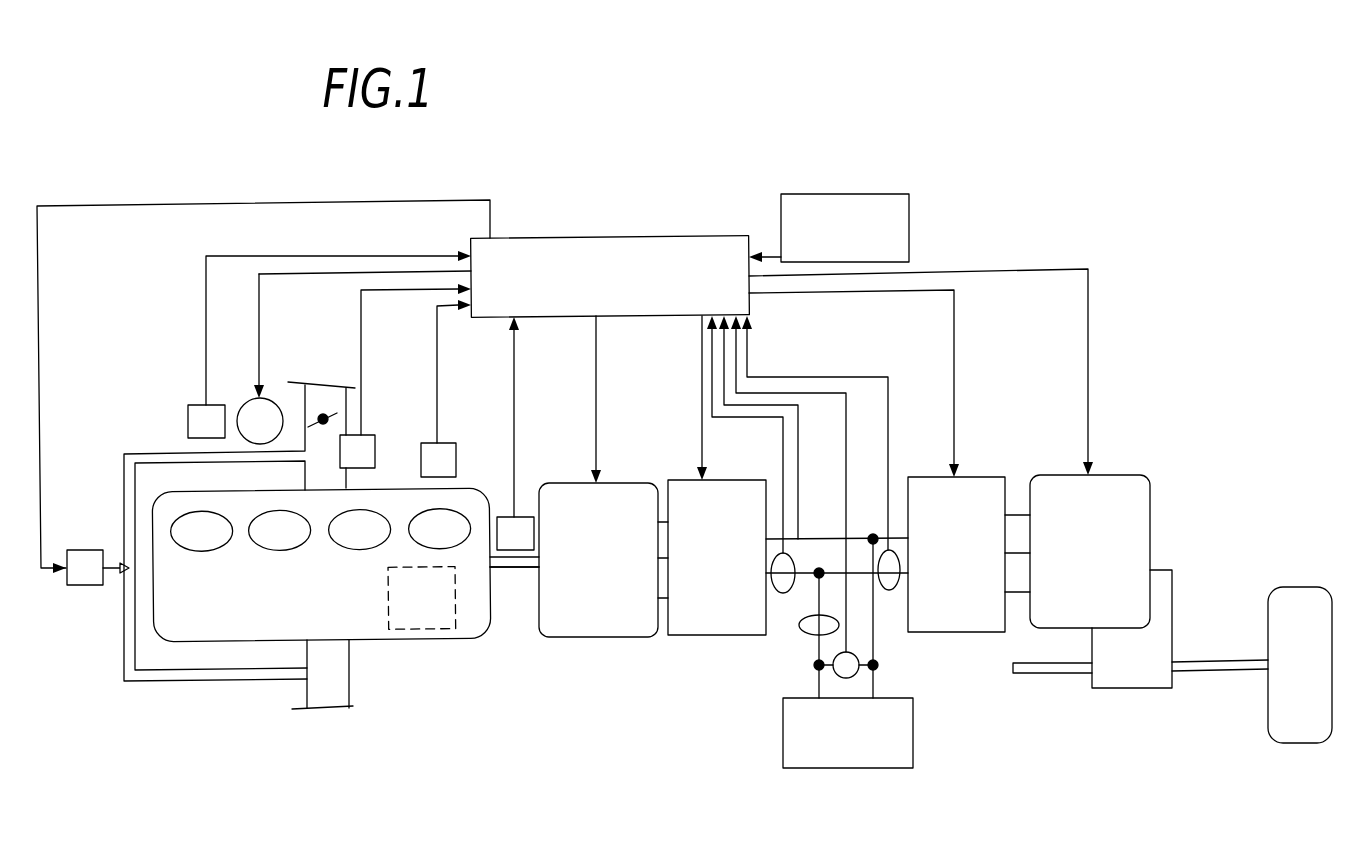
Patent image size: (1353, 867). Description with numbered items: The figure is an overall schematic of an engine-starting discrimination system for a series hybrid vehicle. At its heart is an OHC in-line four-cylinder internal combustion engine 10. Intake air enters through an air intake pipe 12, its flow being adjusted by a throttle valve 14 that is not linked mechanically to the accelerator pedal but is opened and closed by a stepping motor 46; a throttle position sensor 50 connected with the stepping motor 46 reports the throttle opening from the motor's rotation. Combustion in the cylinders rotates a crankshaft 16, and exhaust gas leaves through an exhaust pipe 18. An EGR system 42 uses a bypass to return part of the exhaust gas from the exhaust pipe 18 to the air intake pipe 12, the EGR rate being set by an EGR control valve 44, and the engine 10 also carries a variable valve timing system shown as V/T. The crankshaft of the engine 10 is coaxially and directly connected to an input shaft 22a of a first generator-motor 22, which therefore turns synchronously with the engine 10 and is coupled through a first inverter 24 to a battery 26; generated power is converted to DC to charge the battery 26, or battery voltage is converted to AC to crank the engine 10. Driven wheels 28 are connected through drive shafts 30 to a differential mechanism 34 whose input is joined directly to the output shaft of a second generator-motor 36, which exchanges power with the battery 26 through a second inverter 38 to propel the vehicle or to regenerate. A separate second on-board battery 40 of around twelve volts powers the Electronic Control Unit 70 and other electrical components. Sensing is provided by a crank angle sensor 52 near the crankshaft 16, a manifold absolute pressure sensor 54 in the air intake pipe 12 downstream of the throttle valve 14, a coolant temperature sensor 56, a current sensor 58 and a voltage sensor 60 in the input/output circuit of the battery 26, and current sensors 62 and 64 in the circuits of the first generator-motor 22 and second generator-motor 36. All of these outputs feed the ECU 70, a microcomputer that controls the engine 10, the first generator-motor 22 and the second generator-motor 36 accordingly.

The internal combustion engine 10 is at (378, 654).
The air intake pipe 12 is at (303, 397).
The throttle valve 14 is at (337, 405).
The crankshaft 16 is at (505, 570).
The exhaust pipe 18 is at (305, 690).
The first generator-motor 22 is at (573, 482).
The input shaft 22a is at (530, 570).
The first inverter 24 is at (687, 480).
The battery 26 is at (820, 770).
The driven wheels 28 is at (1298, 585).
The drive shafts 30 is at (1214, 658).
The differential mechanism 34 is at (1155, 568).
The second generator-motor 36 is at (1050, 468).
The second inverter 38 is at (972, 468).
The second on-board battery 40 is at (912, 219).
The EGR system 42 is at (110, 595).
The EGR control valve 44 is at (82, 548).
The stepping motor 46 is at (243, 400).
The throttle position sensor 50 is at (188, 421).
The crank angle sensor 52 is at (507, 515).
The manifold absolute pressure sensor 54 is at (368, 433).
The coolant temperature sensor 56 is at (447, 441).
The current sensor 58 is at (802, 634).
The voltage sensor 60 is at (861, 674).
The current sensor 62 is at (783, 594).
The current sensor 64 is at (890, 592).
The Electronic Control Unit 70 is at (704, 235).